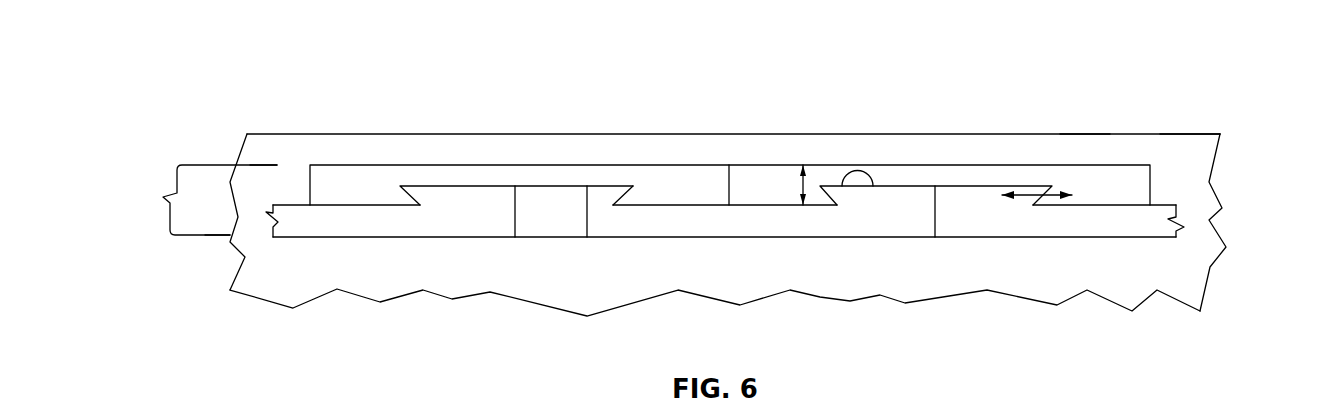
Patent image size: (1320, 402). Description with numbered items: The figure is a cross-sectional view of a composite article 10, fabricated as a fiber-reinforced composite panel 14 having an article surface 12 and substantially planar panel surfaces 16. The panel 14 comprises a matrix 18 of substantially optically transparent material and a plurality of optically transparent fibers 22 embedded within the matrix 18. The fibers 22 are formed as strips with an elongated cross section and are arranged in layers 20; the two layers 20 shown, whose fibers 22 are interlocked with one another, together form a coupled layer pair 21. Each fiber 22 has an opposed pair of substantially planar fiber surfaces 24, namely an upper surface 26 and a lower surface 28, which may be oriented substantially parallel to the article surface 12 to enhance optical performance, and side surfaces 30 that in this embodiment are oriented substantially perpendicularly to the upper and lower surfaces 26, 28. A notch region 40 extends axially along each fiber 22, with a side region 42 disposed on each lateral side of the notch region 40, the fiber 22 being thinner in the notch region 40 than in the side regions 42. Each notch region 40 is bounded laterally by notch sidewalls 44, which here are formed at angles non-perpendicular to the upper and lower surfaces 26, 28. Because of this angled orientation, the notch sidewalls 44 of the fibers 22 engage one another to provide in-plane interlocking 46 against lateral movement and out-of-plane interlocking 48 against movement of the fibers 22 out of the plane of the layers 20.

The composite article 10 is at (1190, 134).
The article surface 12 is at (1141, 134).
The fiber-reinforced composite panel 14 is at (1188, 48).
The panel surfaces 16 is at (1086, 134).
The matrix 18 is at (1182, 283).
The layer 20 is at (283, 188).
The coupled layer pair 21 is at (205, 200).
The fiber 22 is at (563, 215).
The fiber surfaces 24 is at (460, 237).
The upper surface 26 is at (873, 186).
The lower surface 28 is at (803, 237).
The side surface 30 is at (935, 217).
The notch region 40 is at (660, 205).
The side region 42 is at (587, 186).
The notch sidewall 44 is at (623, 197).
The in-plane interlocking 46 is at (1033, 186).
The out-of-plane interlocking 48 is at (802, 185).